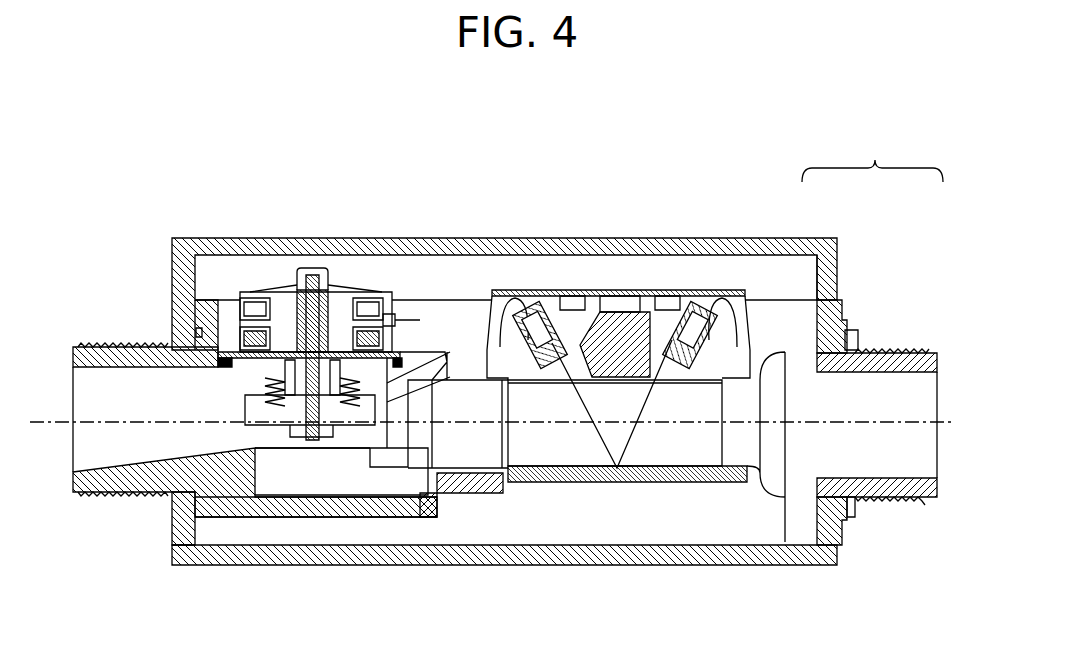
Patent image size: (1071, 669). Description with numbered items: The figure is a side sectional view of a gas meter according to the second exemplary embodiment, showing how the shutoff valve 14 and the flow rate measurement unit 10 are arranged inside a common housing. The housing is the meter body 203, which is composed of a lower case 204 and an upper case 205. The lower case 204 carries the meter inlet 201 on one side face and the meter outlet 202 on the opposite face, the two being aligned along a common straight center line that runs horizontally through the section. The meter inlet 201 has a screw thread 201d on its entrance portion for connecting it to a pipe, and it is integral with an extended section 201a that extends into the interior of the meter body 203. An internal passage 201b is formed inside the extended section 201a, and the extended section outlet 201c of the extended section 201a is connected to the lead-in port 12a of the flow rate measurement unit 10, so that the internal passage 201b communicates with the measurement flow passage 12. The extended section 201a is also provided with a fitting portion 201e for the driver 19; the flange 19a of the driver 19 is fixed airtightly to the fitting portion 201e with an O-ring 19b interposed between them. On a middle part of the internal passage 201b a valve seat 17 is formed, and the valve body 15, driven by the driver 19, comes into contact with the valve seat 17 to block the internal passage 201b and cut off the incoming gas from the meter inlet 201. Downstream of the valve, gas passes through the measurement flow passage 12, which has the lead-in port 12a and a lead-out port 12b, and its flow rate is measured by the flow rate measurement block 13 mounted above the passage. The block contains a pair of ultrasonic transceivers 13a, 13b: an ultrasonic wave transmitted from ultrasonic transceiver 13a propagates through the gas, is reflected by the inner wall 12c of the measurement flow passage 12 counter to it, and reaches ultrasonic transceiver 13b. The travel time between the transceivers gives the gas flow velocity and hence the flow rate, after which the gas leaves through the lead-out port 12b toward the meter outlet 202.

The flow rate measurement unit 10 is at (642, 493).
The measurement flow passage 12 is at (563, 480).
The lead-in port 12a is at (467, 498).
The lead-out port 12b is at (772, 452).
The inner wall 12c is at (650, 470).
The flow rate measurement block 13 is at (630, 292).
The ultrasonic transceiver 13a is at (538, 313).
The ultrasonic transceiver 13b is at (712, 305).
The shutoff valve 14 is at (278, 520).
The valve body 15 is at (172, 545).
The valve seat 17 is at (358, 450).
The driver 19 is at (302, 272).
The flange 19a is at (223, 358).
The O-ring 19b is at (230, 355).
The meter inlet 201 is at (72, 395).
The extended section 201a is at (222, 520).
The internal passage 201b is at (328, 478).
The extended section outlet 201c is at (435, 498).
The screw thread 201d is at (127, 342).
The fitting portion 201e is at (218, 367).
The meter outlet 202 is at (895, 352).
The meter body 203 is at (872, 154).
The lower case 204 is at (842, 320).
The upper case 205 is at (818, 238).